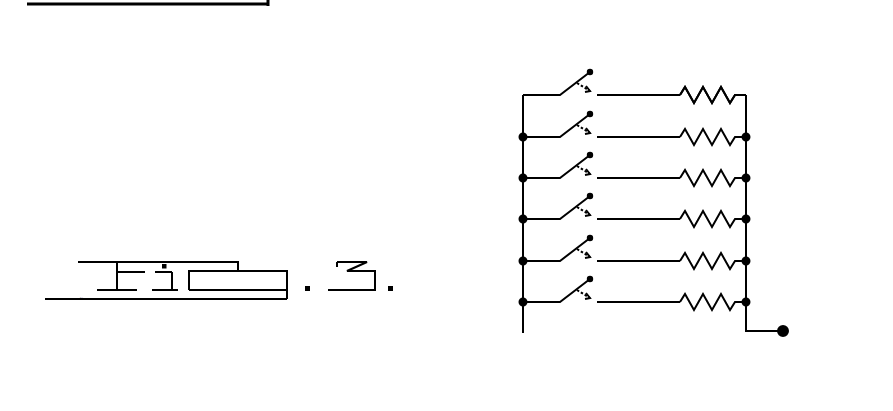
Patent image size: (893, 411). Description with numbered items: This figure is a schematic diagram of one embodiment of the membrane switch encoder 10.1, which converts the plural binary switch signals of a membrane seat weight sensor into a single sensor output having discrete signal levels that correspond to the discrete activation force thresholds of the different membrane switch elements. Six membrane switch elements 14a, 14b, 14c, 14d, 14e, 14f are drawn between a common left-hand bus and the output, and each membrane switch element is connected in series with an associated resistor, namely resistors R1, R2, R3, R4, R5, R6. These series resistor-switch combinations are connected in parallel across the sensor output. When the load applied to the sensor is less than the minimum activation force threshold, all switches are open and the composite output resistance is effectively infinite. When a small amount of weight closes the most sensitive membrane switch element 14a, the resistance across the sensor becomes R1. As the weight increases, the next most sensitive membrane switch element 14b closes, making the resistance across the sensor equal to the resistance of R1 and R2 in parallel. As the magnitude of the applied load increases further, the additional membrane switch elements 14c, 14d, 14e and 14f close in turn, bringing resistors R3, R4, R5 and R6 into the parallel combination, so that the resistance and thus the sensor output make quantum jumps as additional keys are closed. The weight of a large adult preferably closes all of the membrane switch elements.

The membrane switch encoder 10.1 is at (716, 78).
The most sensitive membrane switch element 14a is at (575, 83).
The next most sensitive membrane switch element 14b is at (572, 127).
The membrane switch element 14c is at (572, 168).
The membrane switch element 14d is at (572, 209).
The membrane switch element 14e is at (572, 251).
The membrane switch element 14f is at (572, 292).
The resistor R1 is at (695, 92).
The resistor R2 is at (695, 134).
The resistor R3 is at (695, 175).
The resistor R4 is at (695, 216).
The resistor R5 is at (695, 258).
The resistor R6 is at (695, 299).